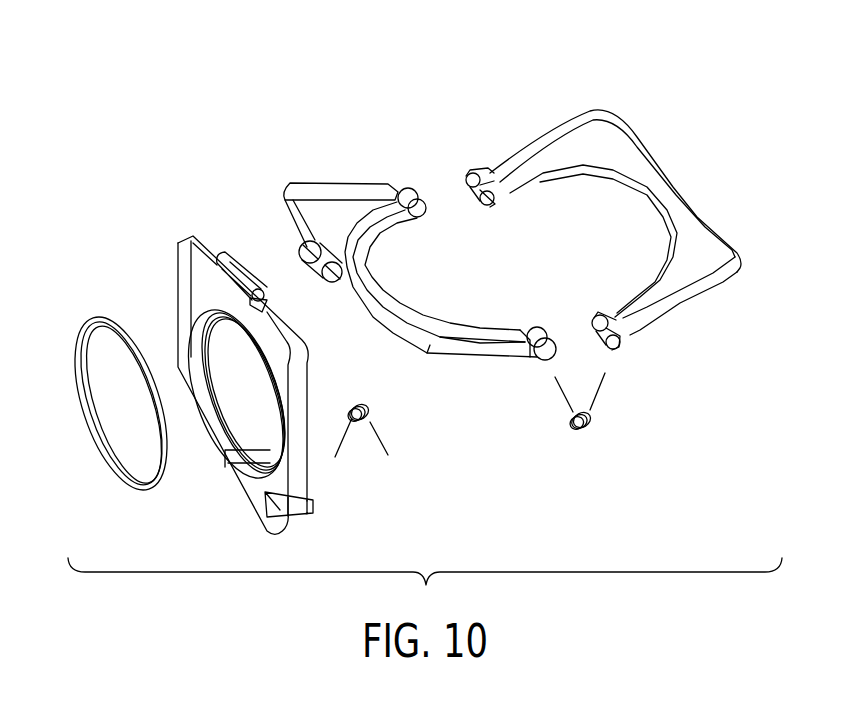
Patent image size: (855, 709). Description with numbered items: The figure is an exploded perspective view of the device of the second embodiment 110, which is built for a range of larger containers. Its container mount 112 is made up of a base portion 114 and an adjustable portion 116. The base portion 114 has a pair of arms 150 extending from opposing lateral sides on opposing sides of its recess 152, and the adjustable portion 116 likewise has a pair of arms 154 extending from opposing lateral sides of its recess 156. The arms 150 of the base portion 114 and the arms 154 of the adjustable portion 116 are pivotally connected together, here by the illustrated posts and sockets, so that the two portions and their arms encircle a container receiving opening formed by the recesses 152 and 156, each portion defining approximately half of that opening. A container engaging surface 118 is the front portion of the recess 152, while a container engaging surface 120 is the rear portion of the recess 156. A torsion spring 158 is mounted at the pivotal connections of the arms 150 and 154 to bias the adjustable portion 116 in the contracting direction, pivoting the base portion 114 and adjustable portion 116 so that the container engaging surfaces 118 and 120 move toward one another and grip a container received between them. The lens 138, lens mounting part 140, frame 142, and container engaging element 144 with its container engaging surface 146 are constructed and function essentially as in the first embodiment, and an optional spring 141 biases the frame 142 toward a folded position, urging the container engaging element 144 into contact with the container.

The second embodiment 110 is at (628, 84).
The container mount 112 is at (384, 130).
The base portion 114 is at (441, 306).
The adjustable portion 116 is at (612, 240).
The container engaging surface 118 is at (365, 266).
The container engaging surface 120 is at (638, 180).
The lens 138 is at (117, 435).
The lens mounting part 140 is at (300, 243).
The spring 141 is at (380, 435).
The frame 142 is at (272, 378).
The container engaging element 144 is at (307, 510).
The container engaging surface 146 is at (290, 470).
The arms 150 is at (360, 188).
The recess 152 is at (431, 282).
The arms 154 is at (505, 162).
The recess 156 is at (594, 246).
The torsion spring 158 is at (597, 410).